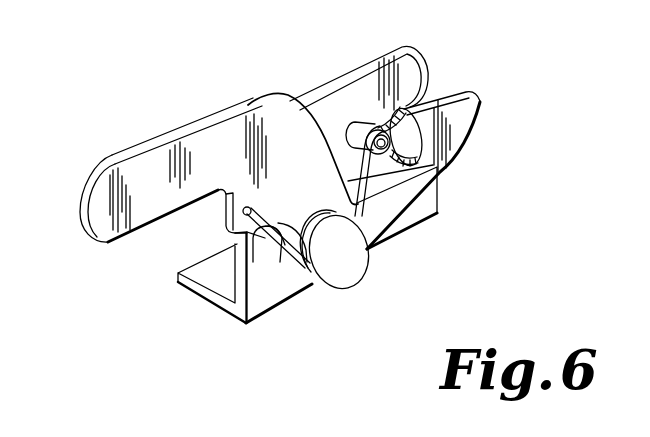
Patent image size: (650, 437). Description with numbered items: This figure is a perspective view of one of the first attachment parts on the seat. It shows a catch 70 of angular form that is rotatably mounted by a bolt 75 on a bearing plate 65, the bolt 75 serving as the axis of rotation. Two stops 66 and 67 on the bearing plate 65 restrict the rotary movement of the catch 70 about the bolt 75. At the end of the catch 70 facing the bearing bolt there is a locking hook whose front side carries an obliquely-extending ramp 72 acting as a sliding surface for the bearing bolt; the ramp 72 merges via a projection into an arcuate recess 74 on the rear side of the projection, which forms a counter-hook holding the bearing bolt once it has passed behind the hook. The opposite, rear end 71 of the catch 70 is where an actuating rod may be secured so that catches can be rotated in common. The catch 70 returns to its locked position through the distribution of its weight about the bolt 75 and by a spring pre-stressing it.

The bearing plate 65 is at (423, 213).
The stop 66 is at (362, 122).
The stop 67 is at (268, 258).
The catch 70 is at (305, 177).
The rear end 71 is at (150, 177).
The ramp 72 is at (445, 92).
The arcuate recess 74 is at (437, 177).
The bolt 75 is at (348, 257).